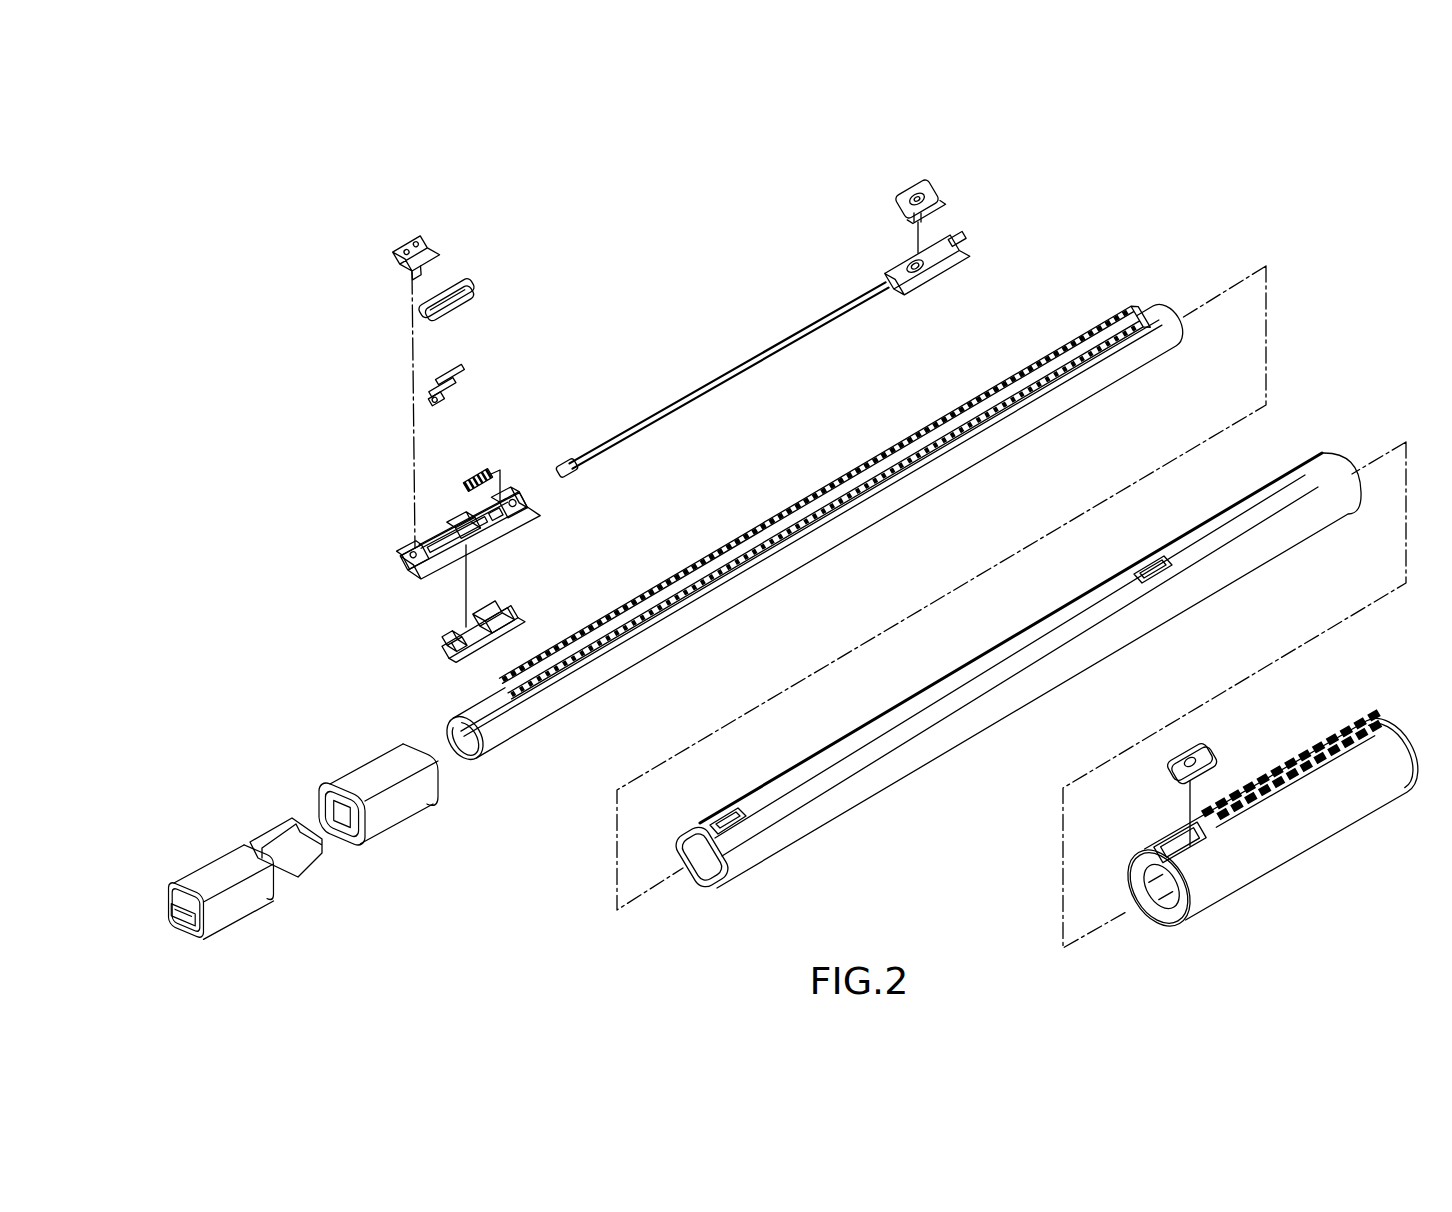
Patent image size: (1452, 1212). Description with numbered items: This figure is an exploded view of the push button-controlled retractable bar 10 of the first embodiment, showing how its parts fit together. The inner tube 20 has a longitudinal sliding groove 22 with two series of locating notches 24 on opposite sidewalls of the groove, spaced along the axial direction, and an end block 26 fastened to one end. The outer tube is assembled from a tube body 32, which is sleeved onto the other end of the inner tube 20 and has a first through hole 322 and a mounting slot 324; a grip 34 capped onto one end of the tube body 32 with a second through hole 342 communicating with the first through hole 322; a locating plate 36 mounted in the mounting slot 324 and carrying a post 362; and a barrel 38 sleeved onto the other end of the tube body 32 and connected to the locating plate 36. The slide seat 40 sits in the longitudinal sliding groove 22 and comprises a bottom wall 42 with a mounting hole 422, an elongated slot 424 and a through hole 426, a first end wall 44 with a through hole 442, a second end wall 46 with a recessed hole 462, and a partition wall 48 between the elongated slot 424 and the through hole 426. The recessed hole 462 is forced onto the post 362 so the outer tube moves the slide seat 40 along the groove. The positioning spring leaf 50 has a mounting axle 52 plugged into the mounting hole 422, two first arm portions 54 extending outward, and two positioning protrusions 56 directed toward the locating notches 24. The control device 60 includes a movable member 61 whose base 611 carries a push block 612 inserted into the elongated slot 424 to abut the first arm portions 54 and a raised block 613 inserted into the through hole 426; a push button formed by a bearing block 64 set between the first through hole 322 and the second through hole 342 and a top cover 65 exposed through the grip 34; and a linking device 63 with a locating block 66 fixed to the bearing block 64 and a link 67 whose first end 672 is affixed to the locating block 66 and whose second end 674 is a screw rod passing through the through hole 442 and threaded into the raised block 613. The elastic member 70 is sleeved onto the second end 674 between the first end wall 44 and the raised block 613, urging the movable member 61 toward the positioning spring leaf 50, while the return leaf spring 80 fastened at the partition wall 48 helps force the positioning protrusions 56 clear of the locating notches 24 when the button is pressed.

The push button-controlled retractable bar 10 is at (290, 286).
The inner tube 20 is at (1160, 303).
The longitudinal sliding groove 22 is at (468, 760).
The locating notches 24 is at (600, 652).
The end block 26 is at (238, 900).
The tube body 32 is at (887, 767).
The first through hole 322 is at (1157, 572).
The mounting slot 324 is at (742, 828).
The grip 34 is at (1317, 823).
The second through hole 342 is at (1190, 852).
The locating plate 36 is at (437, 230).
The post 362 is at (403, 242).
The barrel 38 is at (398, 817).
The slide seat 40 is at (385, 571).
The bottom wall 42 is at (446, 573).
The mounting hole 422 is at (415, 556).
The elongated slot 424 is at (445, 540).
The through hole 426 is at (513, 525).
The first end wall 44 is at (516, 498).
The through hole 442 is at (505, 494).
The second end wall 46 is at (408, 576).
The recessed hole 462 is at (407, 550).
The partition wall 48 is at (490, 532).
The positioning spring leaf 50 is at (475, 360).
The mounting axle 52 is at (427, 393).
The first arm portions 54 is at (447, 373).
The positioning protrusions 56 is at (433, 380).
The control device 60 is at (967, 214).
The movable member 61 is at (520, 612).
The base 611 is at (470, 650).
The push block 612 is at (462, 631).
The raised block 613 is at (512, 616).
The linking device 63 is at (890, 372).
The bearing block 64 is at (897, 197).
The top cover 65 is at (1203, 745).
The locating block 66 is at (918, 275).
The link 67 is at (836, 318).
The first end 672 is at (963, 237).
The second end 674 is at (585, 470).
The elastic member 70 is at (472, 470).
The return leaf spring 80 is at (480, 278).